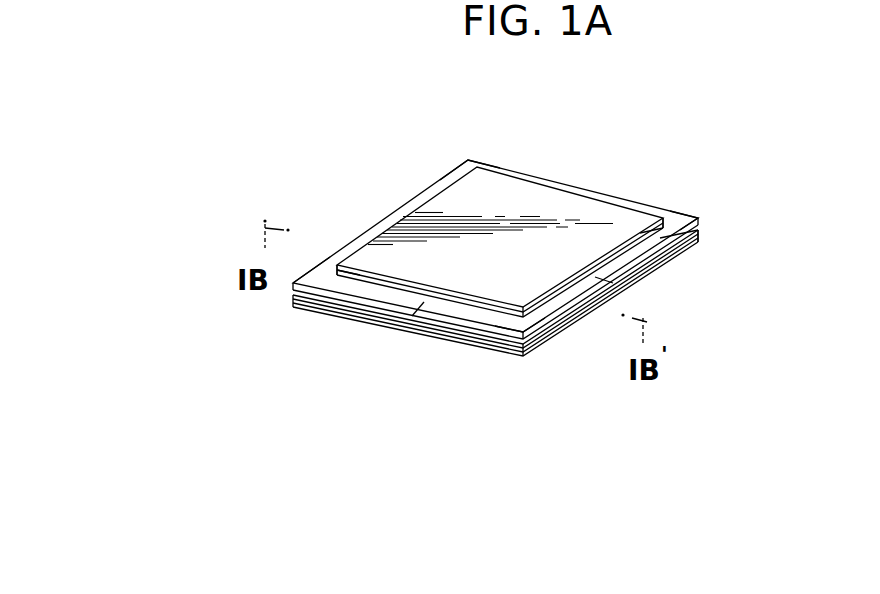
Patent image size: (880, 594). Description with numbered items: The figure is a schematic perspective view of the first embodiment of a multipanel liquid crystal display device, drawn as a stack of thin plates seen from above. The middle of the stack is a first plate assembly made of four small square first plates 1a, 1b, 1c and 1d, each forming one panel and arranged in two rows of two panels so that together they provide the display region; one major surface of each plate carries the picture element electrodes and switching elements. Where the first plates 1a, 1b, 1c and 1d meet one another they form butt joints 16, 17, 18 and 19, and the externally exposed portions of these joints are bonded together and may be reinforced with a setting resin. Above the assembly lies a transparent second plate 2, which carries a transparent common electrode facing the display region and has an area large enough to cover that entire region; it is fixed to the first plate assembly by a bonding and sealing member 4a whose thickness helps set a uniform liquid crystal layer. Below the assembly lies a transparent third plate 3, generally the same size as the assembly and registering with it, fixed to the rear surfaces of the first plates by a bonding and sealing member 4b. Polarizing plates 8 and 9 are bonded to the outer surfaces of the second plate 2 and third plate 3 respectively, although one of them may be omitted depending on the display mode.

The first plate 1a is at (357, 240).
The first plate 1b is at (447, 175).
The first plate 1c is at (698, 218).
The first plate 1d is at (528, 335).
The second plate 2 is at (334, 267).
The third plate 3 is at (366, 318).
The bonding and sealing member 4a is at (661, 228).
The bonding and sealing member 4b is at (700, 238).
The polarizing plate 8 is at (597, 200).
The polarizing plate 9 is at (498, 356).
The butt joint 16 is at (388, 222).
The butt joint 17 is at (413, 318).
The butt joint 18 is at (613, 283).
The butt joint 19 is at (581, 189).